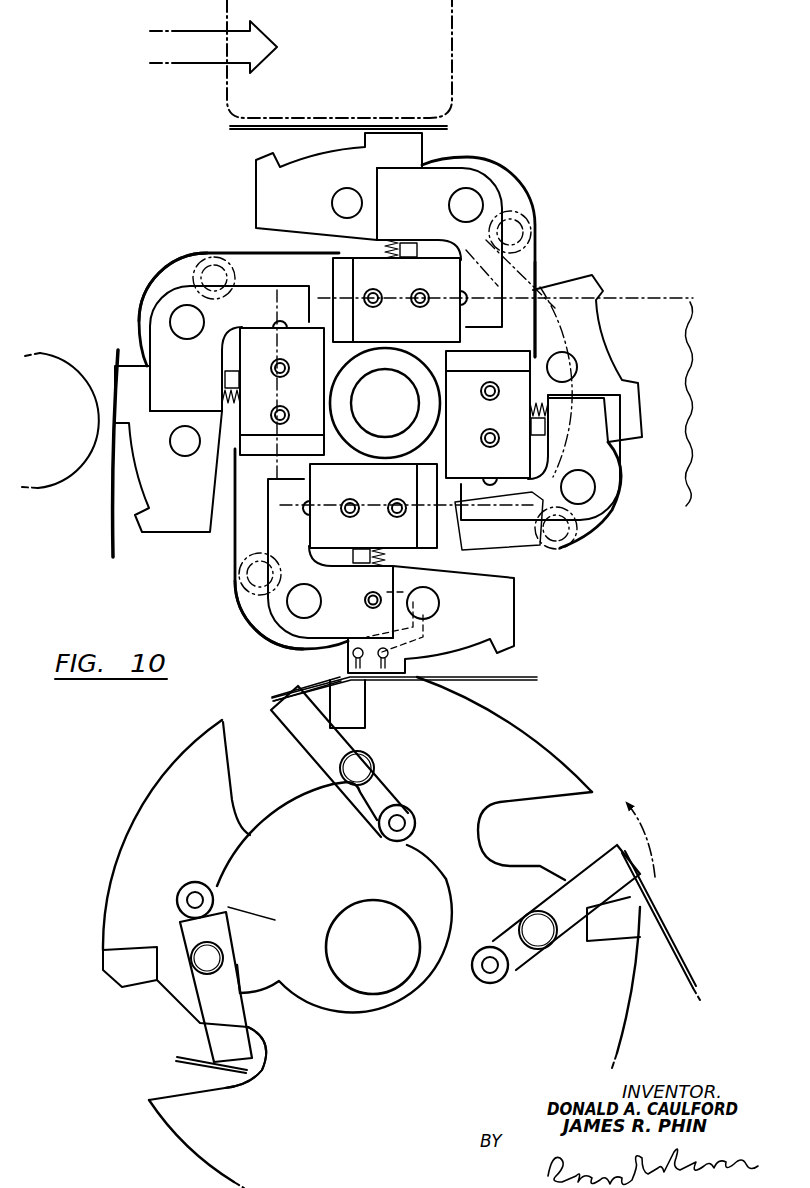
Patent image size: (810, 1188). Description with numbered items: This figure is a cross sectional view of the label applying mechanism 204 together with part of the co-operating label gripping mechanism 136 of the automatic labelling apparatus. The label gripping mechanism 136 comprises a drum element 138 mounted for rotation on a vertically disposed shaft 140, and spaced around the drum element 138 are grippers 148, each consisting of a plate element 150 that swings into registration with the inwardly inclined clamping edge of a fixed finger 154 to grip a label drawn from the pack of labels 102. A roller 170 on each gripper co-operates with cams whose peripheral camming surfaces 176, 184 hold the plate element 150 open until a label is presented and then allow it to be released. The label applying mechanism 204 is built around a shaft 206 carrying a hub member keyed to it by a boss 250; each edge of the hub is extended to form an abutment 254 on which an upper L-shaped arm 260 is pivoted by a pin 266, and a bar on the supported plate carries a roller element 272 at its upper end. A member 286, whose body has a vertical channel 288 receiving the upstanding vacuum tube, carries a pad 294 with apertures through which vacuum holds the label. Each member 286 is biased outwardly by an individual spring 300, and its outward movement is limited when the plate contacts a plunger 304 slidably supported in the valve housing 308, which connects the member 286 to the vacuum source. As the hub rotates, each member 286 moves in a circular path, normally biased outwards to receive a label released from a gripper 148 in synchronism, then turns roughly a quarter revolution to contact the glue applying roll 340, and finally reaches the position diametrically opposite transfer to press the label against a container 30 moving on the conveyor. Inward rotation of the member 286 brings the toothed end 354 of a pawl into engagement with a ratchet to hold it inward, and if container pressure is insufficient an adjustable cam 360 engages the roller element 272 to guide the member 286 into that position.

The container 30 is at (433, 81).
The pack of labels 102 is at (248, 134).
The label gripping mechanism 136 is at (596, 758).
The drum element 138 is at (163, 783).
The shaft 140 is at (355, 917).
The gripper 148 is at (277, 722).
The plate element 150 is at (318, 680).
The fixed finger 154 is at (357, 713).
The roller 170 is at (409, 811).
The peripheral camming surface 176 is at (262, 1012).
The peripheral camming surface 184 is at (237, 858).
The label applying mechanism 204 is at (612, 190).
The shaft 206 is at (374, 412).
The boss 250 is at (420, 443).
The abutment 254 is at (147, 307).
The upper L-shaped arm 260 is at (487, 192).
The pin 266 is at (638, 491).
The roller element 272 is at (522, 218).
The member 286 is at (255, 184).
The vertical channel 288 is at (428, 603).
The pad 294 is at (392, 127).
The spring 300 is at (387, 252).
The plunger 304 is at (487, 495).
The valve housing 308 is at (368, 273).
The glue applying roll 340 is at (73, 378).
The toothed end 354 is at (272, 323).
The adjustable cam 360 is at (545, 292).